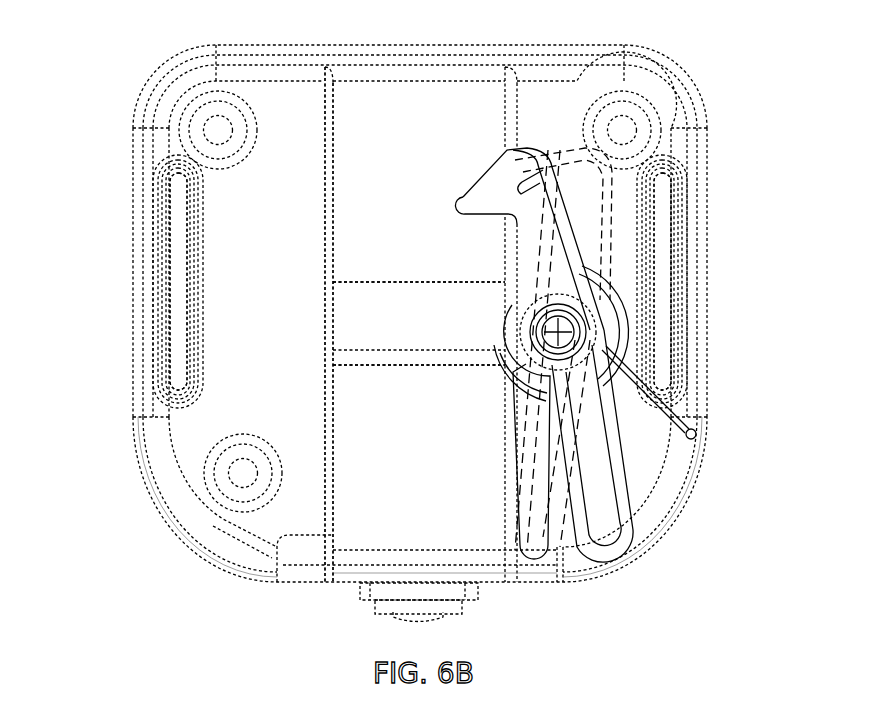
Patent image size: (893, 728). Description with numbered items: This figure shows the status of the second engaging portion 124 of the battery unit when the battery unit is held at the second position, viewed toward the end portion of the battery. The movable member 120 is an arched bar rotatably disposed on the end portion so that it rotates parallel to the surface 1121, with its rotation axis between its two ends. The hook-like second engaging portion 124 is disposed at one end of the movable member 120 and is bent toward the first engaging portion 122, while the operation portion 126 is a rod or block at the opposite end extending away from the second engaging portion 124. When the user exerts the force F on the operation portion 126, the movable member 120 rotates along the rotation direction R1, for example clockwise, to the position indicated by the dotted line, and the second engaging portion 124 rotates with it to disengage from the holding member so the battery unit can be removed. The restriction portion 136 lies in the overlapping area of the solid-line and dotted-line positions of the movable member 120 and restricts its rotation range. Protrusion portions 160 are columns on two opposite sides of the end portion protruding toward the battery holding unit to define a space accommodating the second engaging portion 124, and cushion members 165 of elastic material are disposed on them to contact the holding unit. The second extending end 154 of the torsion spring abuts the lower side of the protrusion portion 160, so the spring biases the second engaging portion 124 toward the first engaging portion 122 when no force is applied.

The movable member 120 is at (516, 548).
The first engaging portion 122 is at (393, 327).
The second engaging portion 124 is at (510, 187).
The operation portion 126 is at (605, 535).
The restriction portion 136 is at (620, 203).
The second extending end 154 is at (698, 417).
The protrusion portion 160 is at (160, 227).
The cushion member 165 is at (177, 280).
The surface 1121 is at (567, 93).
The force F is at (640, 510).
The rotation direction R1 is at (567, 130).